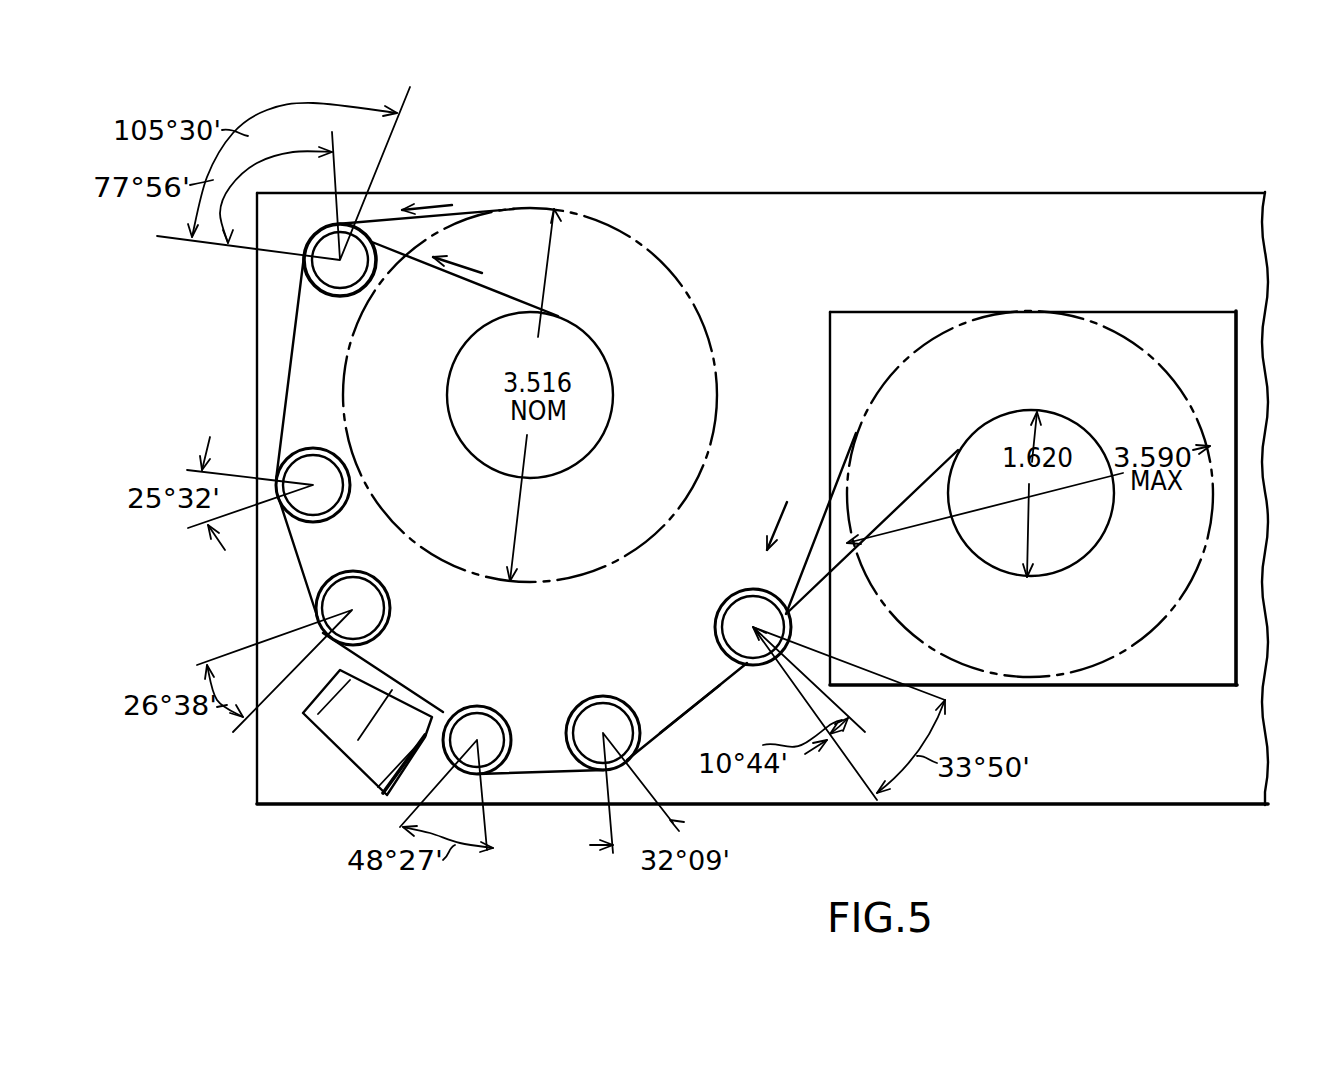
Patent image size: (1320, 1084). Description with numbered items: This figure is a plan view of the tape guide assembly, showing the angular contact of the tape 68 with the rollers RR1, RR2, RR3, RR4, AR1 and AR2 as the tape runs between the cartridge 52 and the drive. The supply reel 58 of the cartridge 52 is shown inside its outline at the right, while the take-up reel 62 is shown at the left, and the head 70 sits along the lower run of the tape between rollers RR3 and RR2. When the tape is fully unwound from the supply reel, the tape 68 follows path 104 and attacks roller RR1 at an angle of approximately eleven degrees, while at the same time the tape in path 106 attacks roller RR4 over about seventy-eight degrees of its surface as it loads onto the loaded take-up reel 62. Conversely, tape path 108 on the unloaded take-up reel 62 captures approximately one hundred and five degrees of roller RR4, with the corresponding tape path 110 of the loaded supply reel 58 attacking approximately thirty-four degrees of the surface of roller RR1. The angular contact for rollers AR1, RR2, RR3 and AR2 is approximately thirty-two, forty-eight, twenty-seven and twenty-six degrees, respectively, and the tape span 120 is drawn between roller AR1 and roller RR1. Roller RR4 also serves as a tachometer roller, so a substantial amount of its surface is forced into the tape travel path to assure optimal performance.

The cartridge 52 is at (1151, 311).
The supply reel 58 is at (945, 366).
The take-up reel 62 is at (670, 275).
The tape 68 is at (1033, 498).
The head 70 is at (340, 747).
The tape path 104 is at (891, 502).
The tape path 106 is at (427, 204).
The tape path 108 is at (475, 252).
The tape path 110 is at (778, 523).
The belt span 120 is at (710, 693).
The roller RR1 is at (735, 622).
The roller RR2 is at (477, 722).
The roller RR3 is at (377, 605).
The roller RR4 is at (360, 278).
The roller AR1 is at (602, 713).
The roller AR2 is at (333, 476).